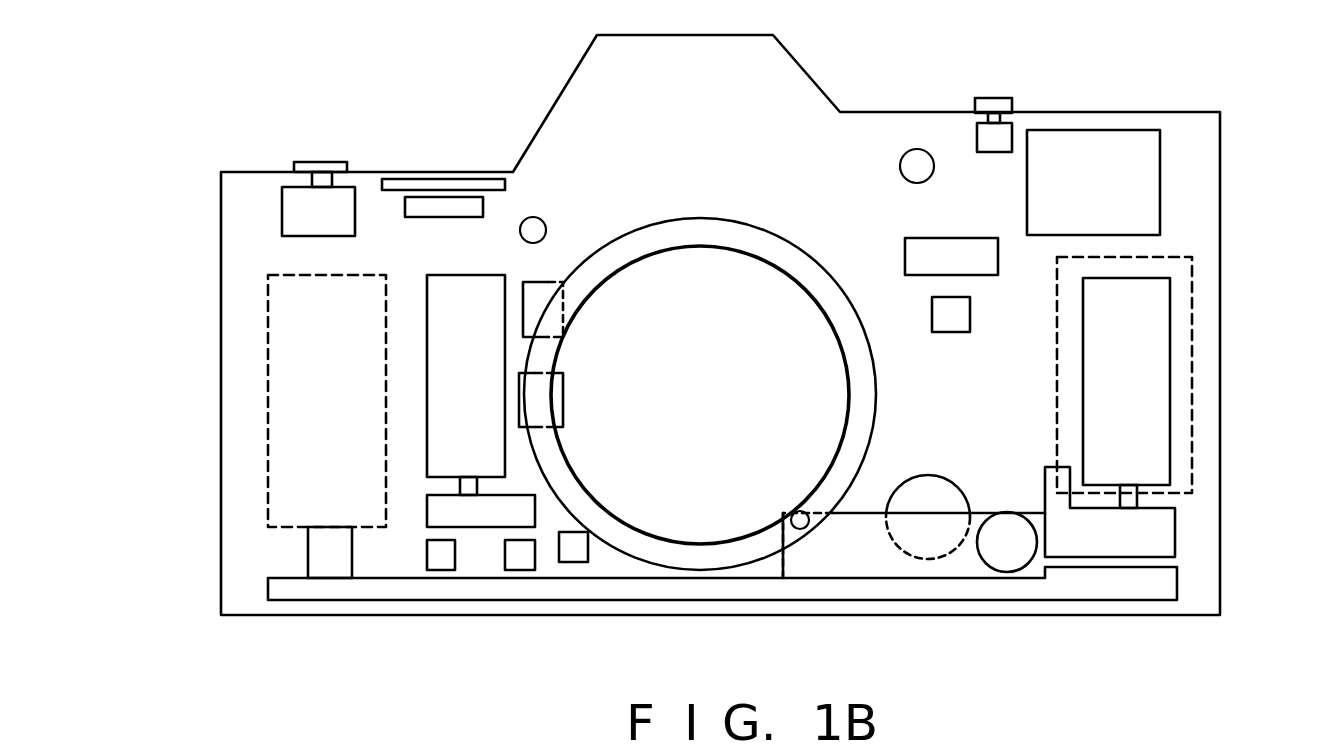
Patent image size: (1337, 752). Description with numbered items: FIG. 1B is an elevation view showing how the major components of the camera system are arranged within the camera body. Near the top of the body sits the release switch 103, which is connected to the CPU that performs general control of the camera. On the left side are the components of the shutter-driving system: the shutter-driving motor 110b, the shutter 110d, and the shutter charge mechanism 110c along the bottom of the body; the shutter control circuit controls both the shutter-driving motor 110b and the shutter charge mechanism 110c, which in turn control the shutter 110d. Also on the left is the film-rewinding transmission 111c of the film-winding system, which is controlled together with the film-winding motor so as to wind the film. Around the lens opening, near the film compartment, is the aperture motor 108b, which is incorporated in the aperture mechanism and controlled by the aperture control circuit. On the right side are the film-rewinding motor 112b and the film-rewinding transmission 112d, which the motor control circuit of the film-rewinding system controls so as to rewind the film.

The release switch 103 is at (312, 161).
The shutter-driving motor 110b is at (268, 372).
The shutter charge mechanism 110c is at (580, 603).
The shutter 110d is at (427, 297).
The film-rewinding transmission 111c is at (427, 512).
The aperture motor 108b is at (930, 475).
The film-rewinding motor 112b is at (1170, 322).
The film-rewinding transmission 112d is at (1158, 528).